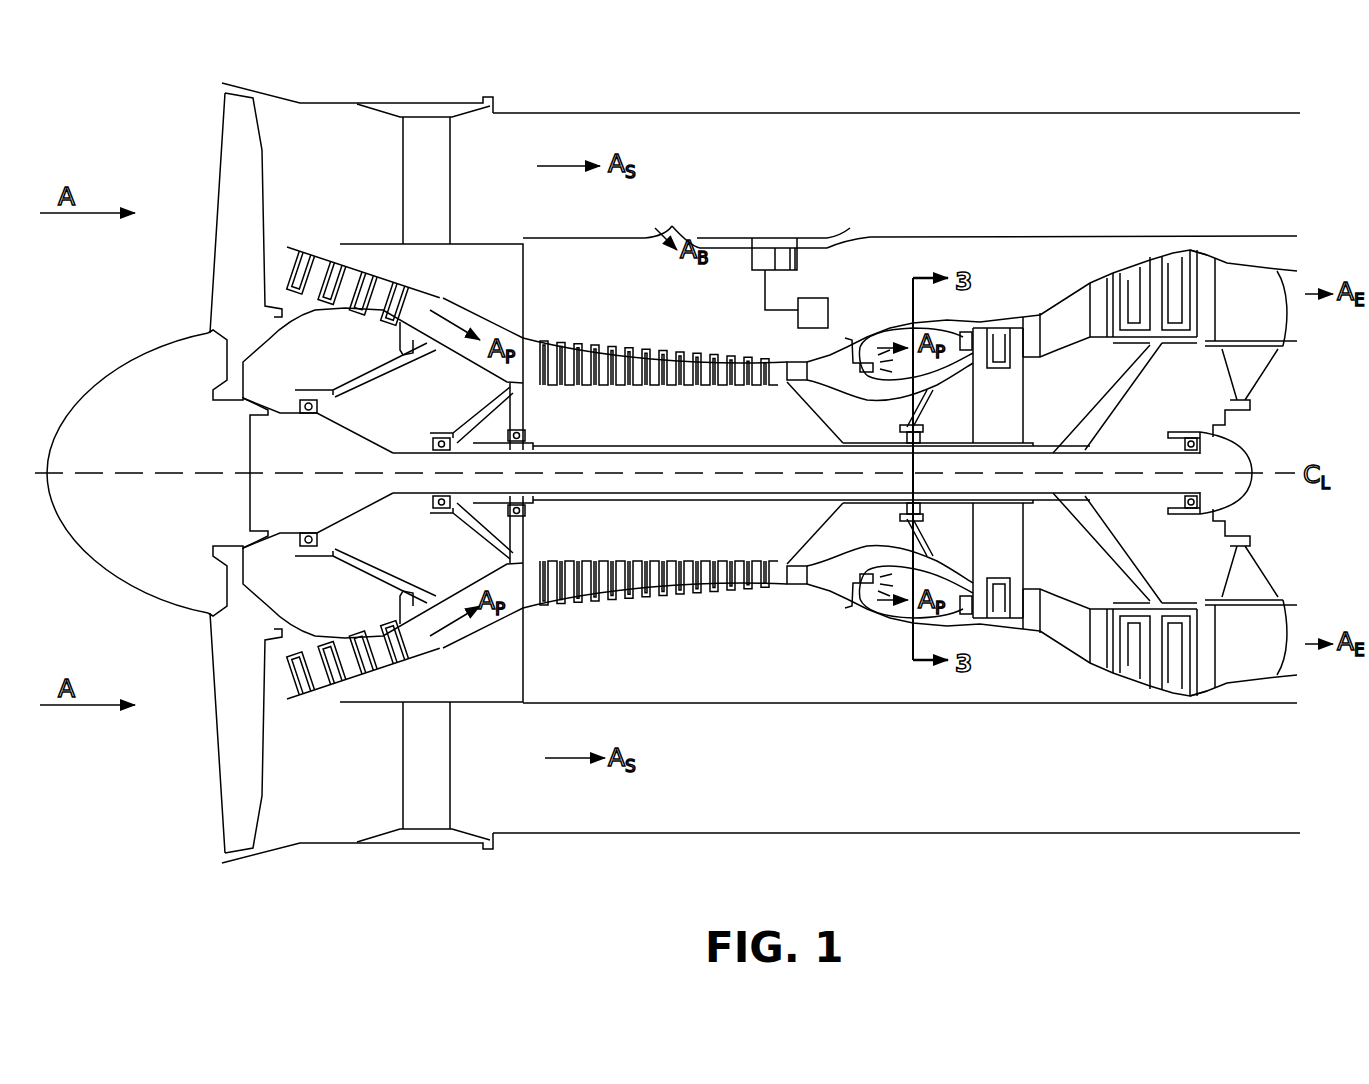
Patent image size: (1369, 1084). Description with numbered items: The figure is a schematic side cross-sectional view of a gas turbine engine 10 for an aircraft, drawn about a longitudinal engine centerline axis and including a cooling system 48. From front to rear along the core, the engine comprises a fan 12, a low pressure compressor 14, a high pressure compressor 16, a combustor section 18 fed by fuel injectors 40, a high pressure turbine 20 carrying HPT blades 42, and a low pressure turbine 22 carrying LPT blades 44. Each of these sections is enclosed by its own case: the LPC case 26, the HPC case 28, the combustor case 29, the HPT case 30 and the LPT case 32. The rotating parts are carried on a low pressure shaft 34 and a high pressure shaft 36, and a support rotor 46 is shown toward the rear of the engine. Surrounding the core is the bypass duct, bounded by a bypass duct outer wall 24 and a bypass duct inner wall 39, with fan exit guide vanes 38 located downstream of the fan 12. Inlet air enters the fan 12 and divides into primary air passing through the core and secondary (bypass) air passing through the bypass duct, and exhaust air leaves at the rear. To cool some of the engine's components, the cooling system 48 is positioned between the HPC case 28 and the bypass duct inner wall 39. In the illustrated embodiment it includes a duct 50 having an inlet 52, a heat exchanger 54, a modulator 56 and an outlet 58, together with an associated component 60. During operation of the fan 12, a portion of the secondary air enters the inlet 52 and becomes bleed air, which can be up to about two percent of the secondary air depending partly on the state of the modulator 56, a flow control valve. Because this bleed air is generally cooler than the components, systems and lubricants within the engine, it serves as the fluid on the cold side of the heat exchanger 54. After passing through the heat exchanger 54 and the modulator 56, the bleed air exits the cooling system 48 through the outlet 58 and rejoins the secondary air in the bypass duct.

The gas turbine engine 10 is at (1060, 162).
The fan 12 is at (213, 765).
The low pressure compressor 14 is at (353, 700).
The high pressure compressor 16 is at (716, 606).
The combustor section 18 is at (905, 332).
The high pressure turbine 20 is at (990, 642).
The low pressure turbine 22 is at (1123, 697).
The bypass duct outer wall 24 is at (334, 103).
The LPC case 26 is at (345, 257).
The HPC case 28 is at (683, 358).
The combustor case 29 is at (897, 618).
The HPT case 30 is at (1037, 313).
The LPT case 32 is at (1197, 252).
The low pressure shaft 34 is at (763, 452).
The high pressure shaft 36 is at (813, 588).
The fan exit guide vanes 38 is at (440, 205).
The bypass duct inner wall 39 is at (1140, 237).
The fuel injectors 40 is at (858, 338).
The HPT blades 42 is at (1010, 620).
The LPT blades 44 is at (1120, 303).
The support rotor 46 is at (1133, 400).
The cooling system 48 is at (842, 192).
The duct 50 is at (675, 250).
The inlet 52 is at (640, 240).
The heat exchanger 54 is at (758, 248).
The modulator 56 is at (787, 248).
The outlet 58 is at (852, 236).
The component 60 is at (826, 300).